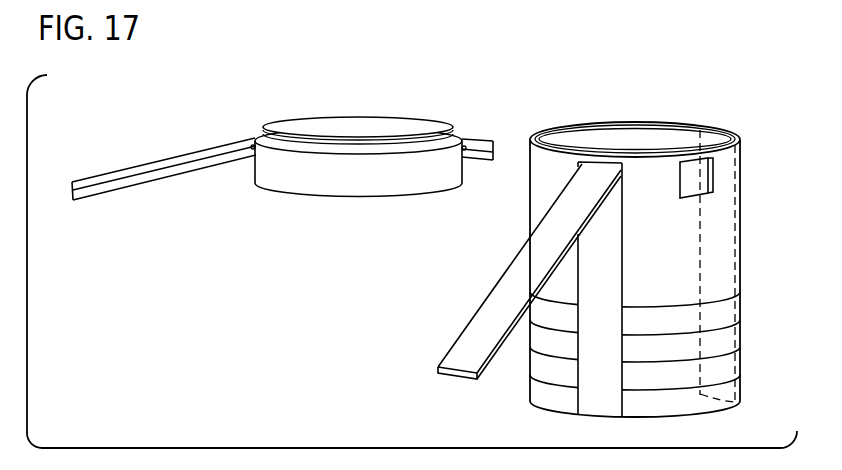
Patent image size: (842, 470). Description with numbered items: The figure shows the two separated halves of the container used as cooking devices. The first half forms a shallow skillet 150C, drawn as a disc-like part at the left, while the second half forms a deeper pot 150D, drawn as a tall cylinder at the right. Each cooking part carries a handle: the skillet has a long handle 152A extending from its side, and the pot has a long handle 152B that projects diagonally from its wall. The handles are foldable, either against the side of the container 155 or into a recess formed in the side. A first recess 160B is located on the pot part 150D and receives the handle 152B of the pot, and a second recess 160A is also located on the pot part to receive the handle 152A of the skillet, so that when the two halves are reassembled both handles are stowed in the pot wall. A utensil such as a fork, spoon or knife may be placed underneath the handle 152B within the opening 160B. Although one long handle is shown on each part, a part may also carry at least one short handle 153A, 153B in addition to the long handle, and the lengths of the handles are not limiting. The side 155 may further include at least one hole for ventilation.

The skillet 150C is at (375, 96).
The pot 150D is at (660, 96).
The handle of the skillet 152A is at (143, 163).
The handle of the pot 152B is at (485, 302).
The short handle 153A is at (474, 136).
The short handle 153B is at (704, 178).
The side of the container 155 is at (538, 196).
The second recess 160A is at (722, 131).
The first recess 160B is at (600, 255).